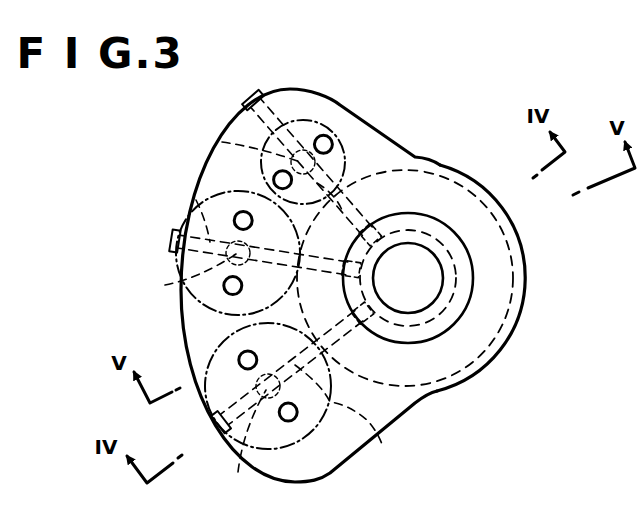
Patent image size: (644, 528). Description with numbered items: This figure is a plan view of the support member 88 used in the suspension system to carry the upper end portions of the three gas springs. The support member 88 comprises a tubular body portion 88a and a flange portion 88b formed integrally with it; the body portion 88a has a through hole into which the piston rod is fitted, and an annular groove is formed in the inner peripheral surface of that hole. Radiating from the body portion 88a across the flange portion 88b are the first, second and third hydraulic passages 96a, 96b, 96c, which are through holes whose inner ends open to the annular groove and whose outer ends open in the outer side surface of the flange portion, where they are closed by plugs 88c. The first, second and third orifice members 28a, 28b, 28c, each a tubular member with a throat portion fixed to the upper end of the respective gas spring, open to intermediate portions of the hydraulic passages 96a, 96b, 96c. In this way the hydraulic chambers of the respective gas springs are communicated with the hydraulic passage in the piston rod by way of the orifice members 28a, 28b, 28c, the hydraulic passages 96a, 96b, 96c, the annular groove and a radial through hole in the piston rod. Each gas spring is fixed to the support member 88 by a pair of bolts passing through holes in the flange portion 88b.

The support member 88 is at (448, 136).
The tubular body portion 88a is at (522, 318).
The flange portion 88b is at (183, 335).
The plugs 88c is at (243, 101).
The first orifice member 28a is at (238, 472).
The second orifice member 28b is at (172, 283).
The third orifice member 28c is at (222, 142).
The first hydraulic passage 96a is at (383, 447).
The second hydraulic passage 96b is at (205, 180).
The third hydraulic passage 96c is at (282, 108).